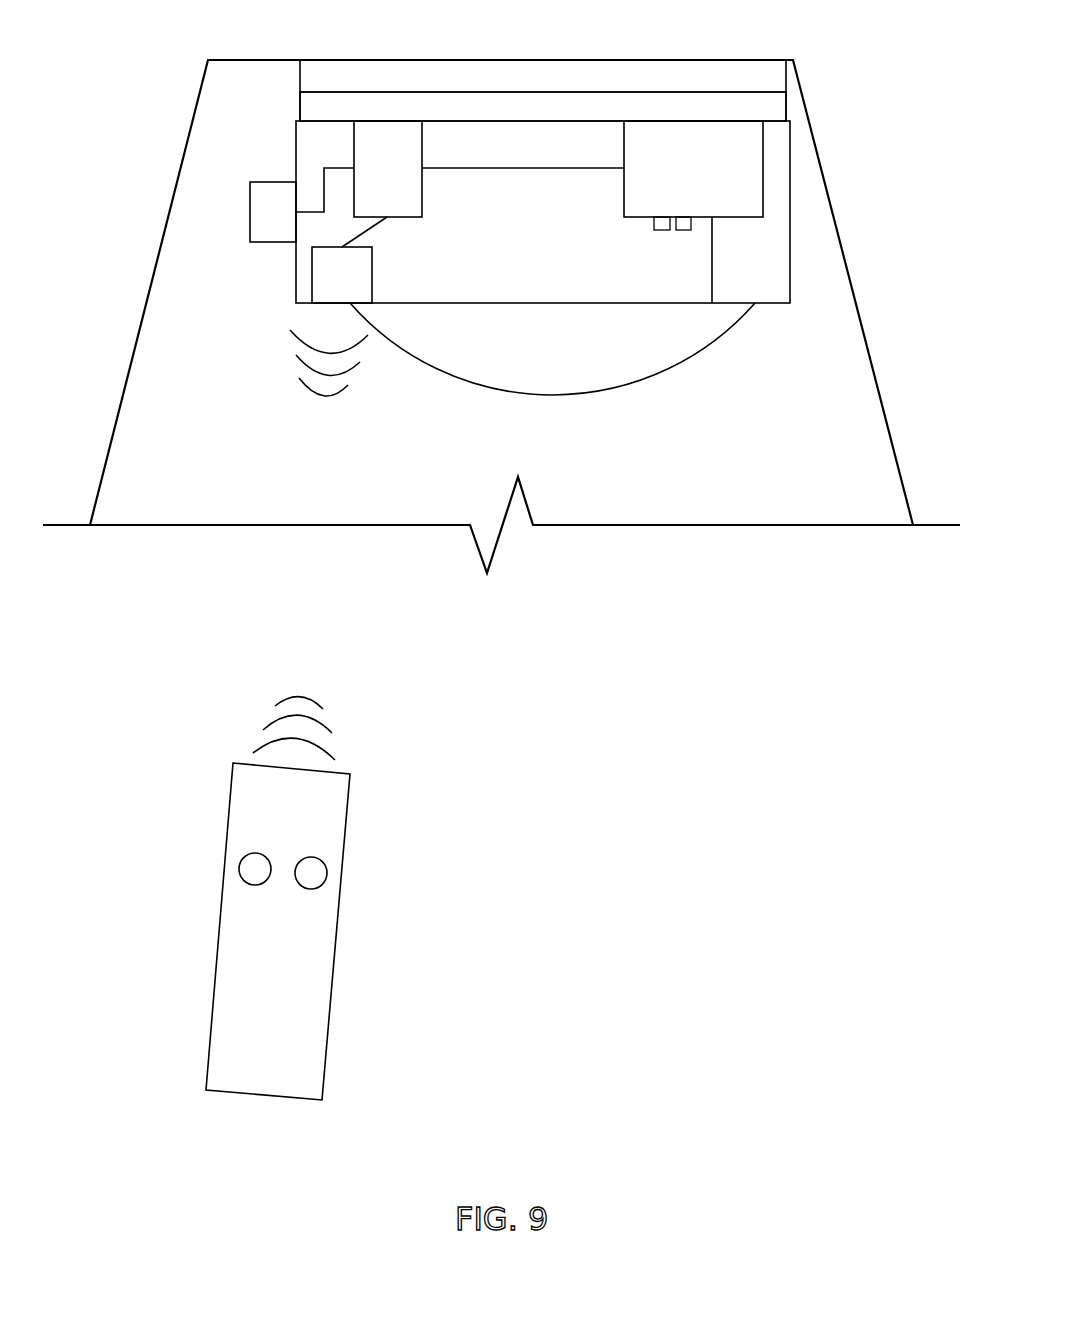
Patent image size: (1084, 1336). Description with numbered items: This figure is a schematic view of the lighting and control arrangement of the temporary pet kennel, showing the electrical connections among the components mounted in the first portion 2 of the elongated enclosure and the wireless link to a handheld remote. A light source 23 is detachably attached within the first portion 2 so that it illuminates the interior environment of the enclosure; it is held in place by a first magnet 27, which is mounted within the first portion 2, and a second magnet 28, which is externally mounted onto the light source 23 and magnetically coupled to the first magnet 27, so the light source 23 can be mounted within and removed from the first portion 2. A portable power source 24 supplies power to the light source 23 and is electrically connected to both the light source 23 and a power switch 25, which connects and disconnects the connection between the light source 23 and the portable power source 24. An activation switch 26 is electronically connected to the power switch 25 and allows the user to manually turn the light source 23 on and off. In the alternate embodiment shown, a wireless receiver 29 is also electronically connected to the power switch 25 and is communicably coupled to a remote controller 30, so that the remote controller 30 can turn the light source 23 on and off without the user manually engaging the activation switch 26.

The first portion 2 is at (208, 60).
The first magnet 27 is at (306, 68).
The second magnet 28 is at (307, 103).
The power switch 25 is at (422, 182).
The activation switch 26 is at (250, 212).
The wireless receiver 29 is at (372, 278).
The portable power source 24 is at (763, 213).
The light source 23 is at (715, 329).
The remote controller 30 is at (342, 865).